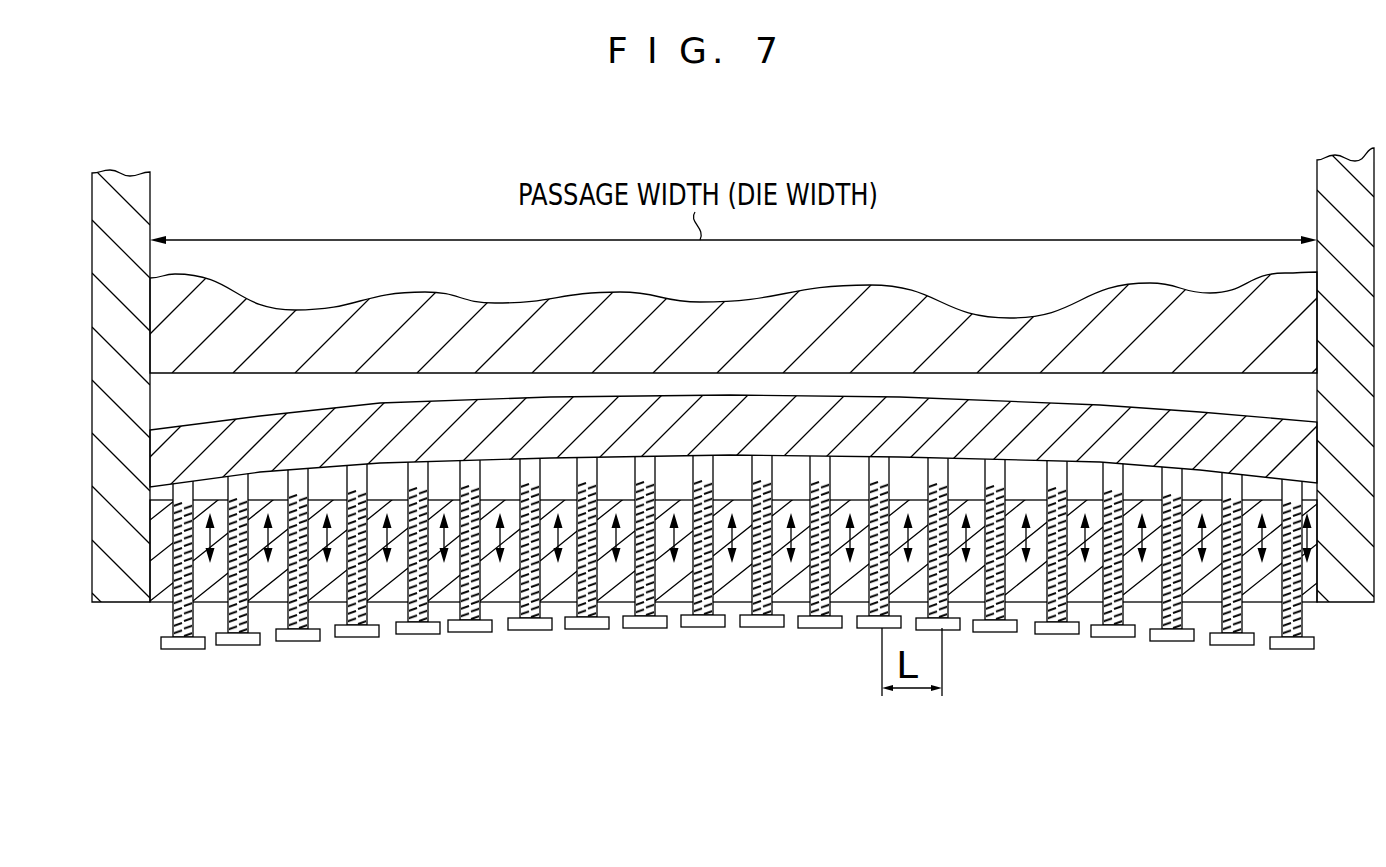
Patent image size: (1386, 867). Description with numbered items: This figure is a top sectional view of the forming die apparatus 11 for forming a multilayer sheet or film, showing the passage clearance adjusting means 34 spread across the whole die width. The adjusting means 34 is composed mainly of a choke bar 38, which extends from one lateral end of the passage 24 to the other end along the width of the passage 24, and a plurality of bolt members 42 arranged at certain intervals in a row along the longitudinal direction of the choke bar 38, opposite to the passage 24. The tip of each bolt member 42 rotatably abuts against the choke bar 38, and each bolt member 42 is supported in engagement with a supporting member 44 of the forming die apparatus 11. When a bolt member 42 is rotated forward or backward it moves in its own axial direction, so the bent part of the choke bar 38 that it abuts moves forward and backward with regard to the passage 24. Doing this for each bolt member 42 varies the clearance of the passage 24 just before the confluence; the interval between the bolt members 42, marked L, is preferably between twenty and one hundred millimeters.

The forming die apparatus 11 is at (1068, 212).
The passage 24 is at (512, 385).
The choke bar 38 is at (975, 420).
The bolt member 42 is at (228, 609).
The supporting member 44 is at (673, 585).
The passage clearance adjusting means 34 is at (710, 642).